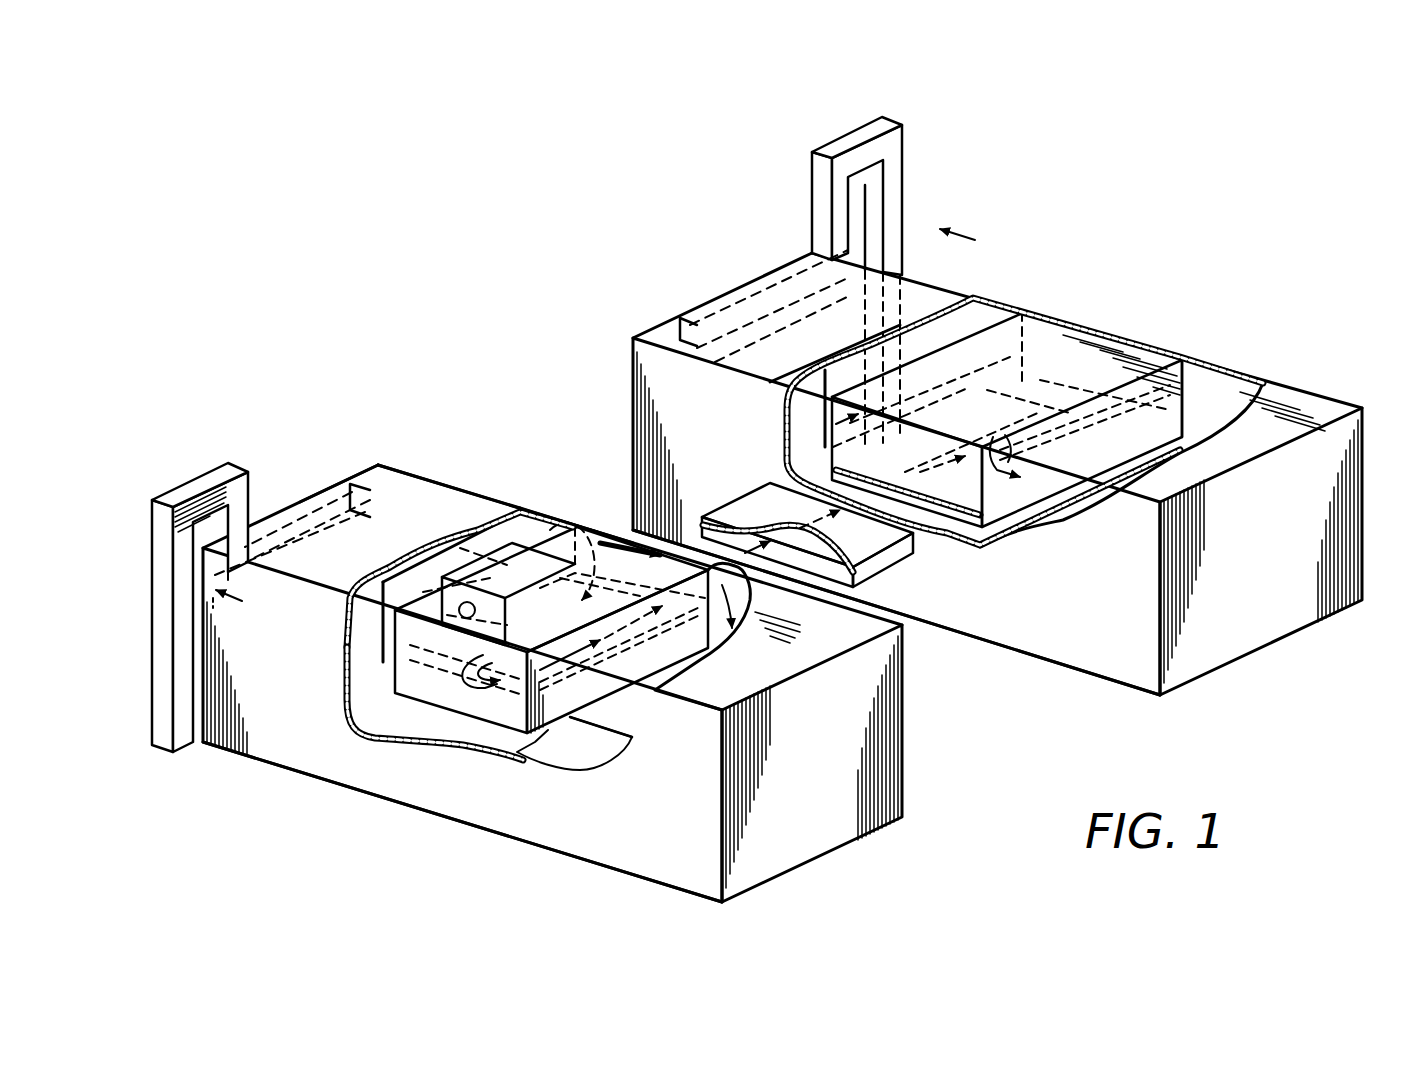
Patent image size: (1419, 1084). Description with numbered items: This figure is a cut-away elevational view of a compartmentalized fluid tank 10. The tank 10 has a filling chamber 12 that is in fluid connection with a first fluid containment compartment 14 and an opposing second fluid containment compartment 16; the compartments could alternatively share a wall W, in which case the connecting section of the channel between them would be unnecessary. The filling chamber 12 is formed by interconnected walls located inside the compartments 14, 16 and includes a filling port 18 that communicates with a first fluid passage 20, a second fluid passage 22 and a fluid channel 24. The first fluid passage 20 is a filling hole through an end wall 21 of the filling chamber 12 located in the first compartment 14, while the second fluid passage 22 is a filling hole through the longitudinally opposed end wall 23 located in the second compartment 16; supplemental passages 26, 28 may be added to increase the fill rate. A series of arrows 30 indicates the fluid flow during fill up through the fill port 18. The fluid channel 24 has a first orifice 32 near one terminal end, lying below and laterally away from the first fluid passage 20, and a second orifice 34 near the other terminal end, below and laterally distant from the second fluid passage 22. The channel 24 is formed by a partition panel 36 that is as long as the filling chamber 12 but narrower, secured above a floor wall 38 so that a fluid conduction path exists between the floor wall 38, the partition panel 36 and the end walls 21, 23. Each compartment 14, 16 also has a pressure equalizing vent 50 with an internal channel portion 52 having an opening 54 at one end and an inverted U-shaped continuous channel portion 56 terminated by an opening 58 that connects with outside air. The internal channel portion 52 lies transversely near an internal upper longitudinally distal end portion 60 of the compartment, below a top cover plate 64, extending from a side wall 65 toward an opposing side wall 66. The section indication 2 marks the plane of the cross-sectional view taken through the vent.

The fluid tank 10 is at (352, 330).
The filling chamber 12 is at (412, 667).
The first fluid containment compartment 14 is at (790, 828).
The second fluid containment compartment 16 is at (1110, 645).
The filling port 18 is at (458, 611).
The first fluid passage 20 is at (566, 495).
The end wall 21 is at (464, 535).
The second fluid passage 22 is at (1023, 443).
The end wall 23 is at (603, 678).
The fluid channel 24 is at (1222, 453).
The supplemental passage 26 is at (761, 614).
The supplemental passage 28 is at (700, 448).
The arrows 30 is at (462, 822).
The first orifice 32 is at (306, 692).
The second orifice 34 is at (1197, 390).
The partition panel 36 is at (876, 548).
The floor wall 38 is at (527, 766).
The pressure equalizing vent 50 is at (496, 435).
The internal channel portion 52 is at (449, 474).
The opening 54 is at (339, 459).
The inverted U-shaped continuous channel portion 56 is at (224, 468).
The opening 58 is at (160, 753).
The internal upper longitudinally distal end portion 60 is at (330, 570).
The top cover plate 64 is at (393, 485).
The side wall 65 is at (212, 638).
The side wall 66 is at (556, 492).
The section line 2 is at (604, 423).
The shared wall W is at (1040, 637).